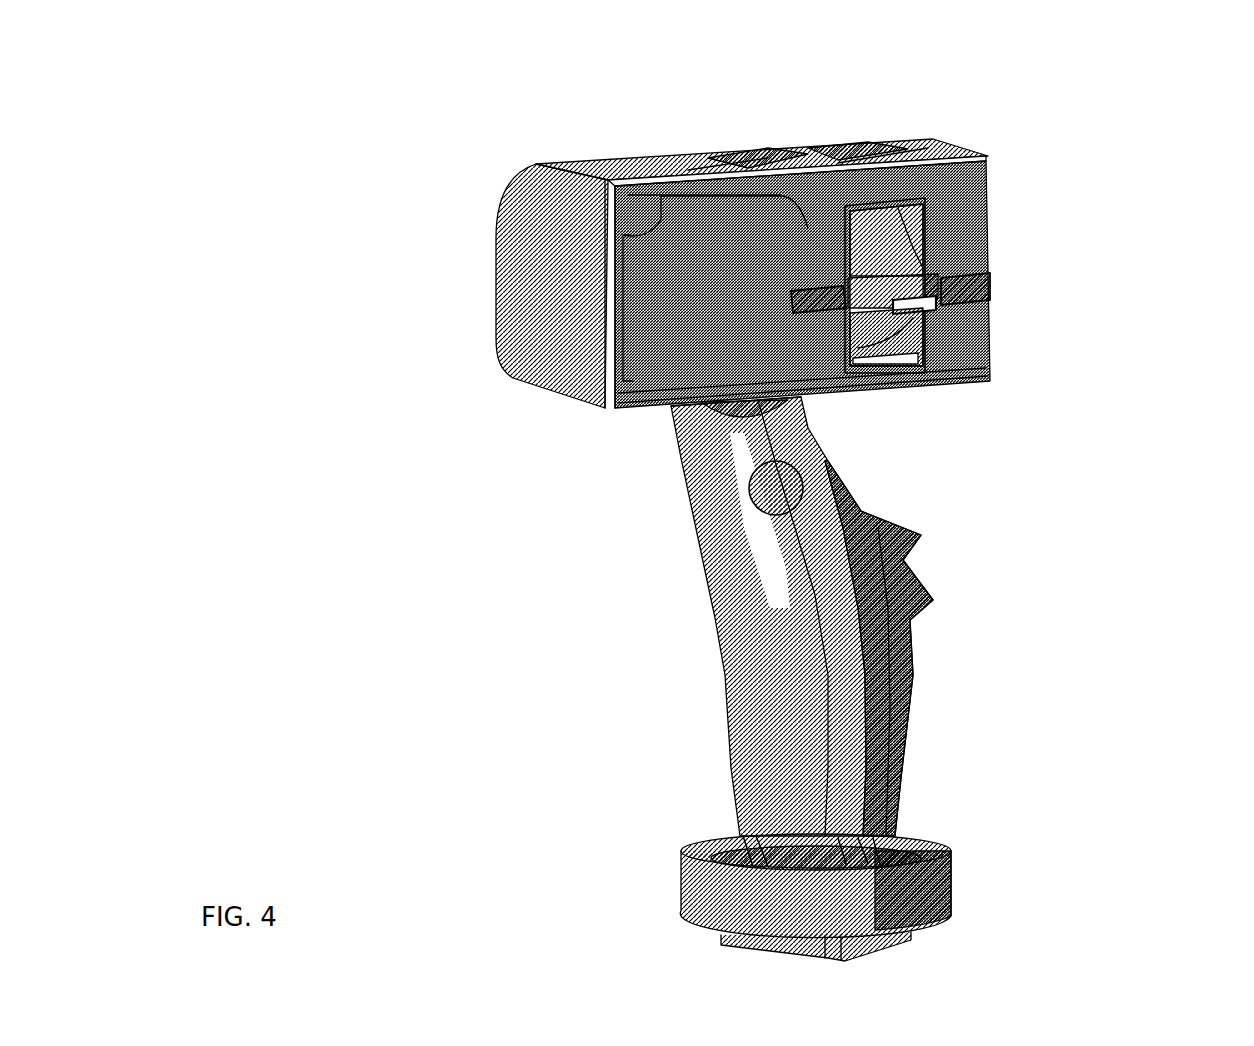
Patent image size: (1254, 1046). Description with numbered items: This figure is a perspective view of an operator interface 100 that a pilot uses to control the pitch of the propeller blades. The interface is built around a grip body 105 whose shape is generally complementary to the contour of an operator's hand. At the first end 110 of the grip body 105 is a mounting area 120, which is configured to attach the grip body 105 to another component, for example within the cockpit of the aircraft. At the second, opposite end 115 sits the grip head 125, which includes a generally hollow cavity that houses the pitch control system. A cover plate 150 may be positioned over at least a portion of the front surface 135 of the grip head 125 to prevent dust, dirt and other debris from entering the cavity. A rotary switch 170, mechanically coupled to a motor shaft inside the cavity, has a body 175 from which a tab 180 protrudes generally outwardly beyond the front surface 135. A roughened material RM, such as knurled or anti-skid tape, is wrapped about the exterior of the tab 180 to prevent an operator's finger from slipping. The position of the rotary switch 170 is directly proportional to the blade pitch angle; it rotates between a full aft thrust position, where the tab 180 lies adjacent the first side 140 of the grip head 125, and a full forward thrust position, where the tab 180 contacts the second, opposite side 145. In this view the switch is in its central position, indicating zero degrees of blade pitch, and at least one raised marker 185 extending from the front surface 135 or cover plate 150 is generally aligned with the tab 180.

The operator interface 100 is at (340, 105).
The grip body 105 is at (718, 605).
The first end 110 is at (907, 833).
The second end 115 is at (665, 423).
The mounting area 120 is at (710, 884).
The grip head 125 is at (523, 282).
The front surface 135 is at (958, 347).
The first side 140 is at (930, 377).
The second side 145 is at (925, 145).
The cover plate 150 is at (618, 168).
The rotary switch 170 is at (935, 320).
The body 175 is at (890, 232).
The tab 180 is at (940, 266).
The raised marker 185 is at (800, 283).
The roughened material RM is at (925, 299).